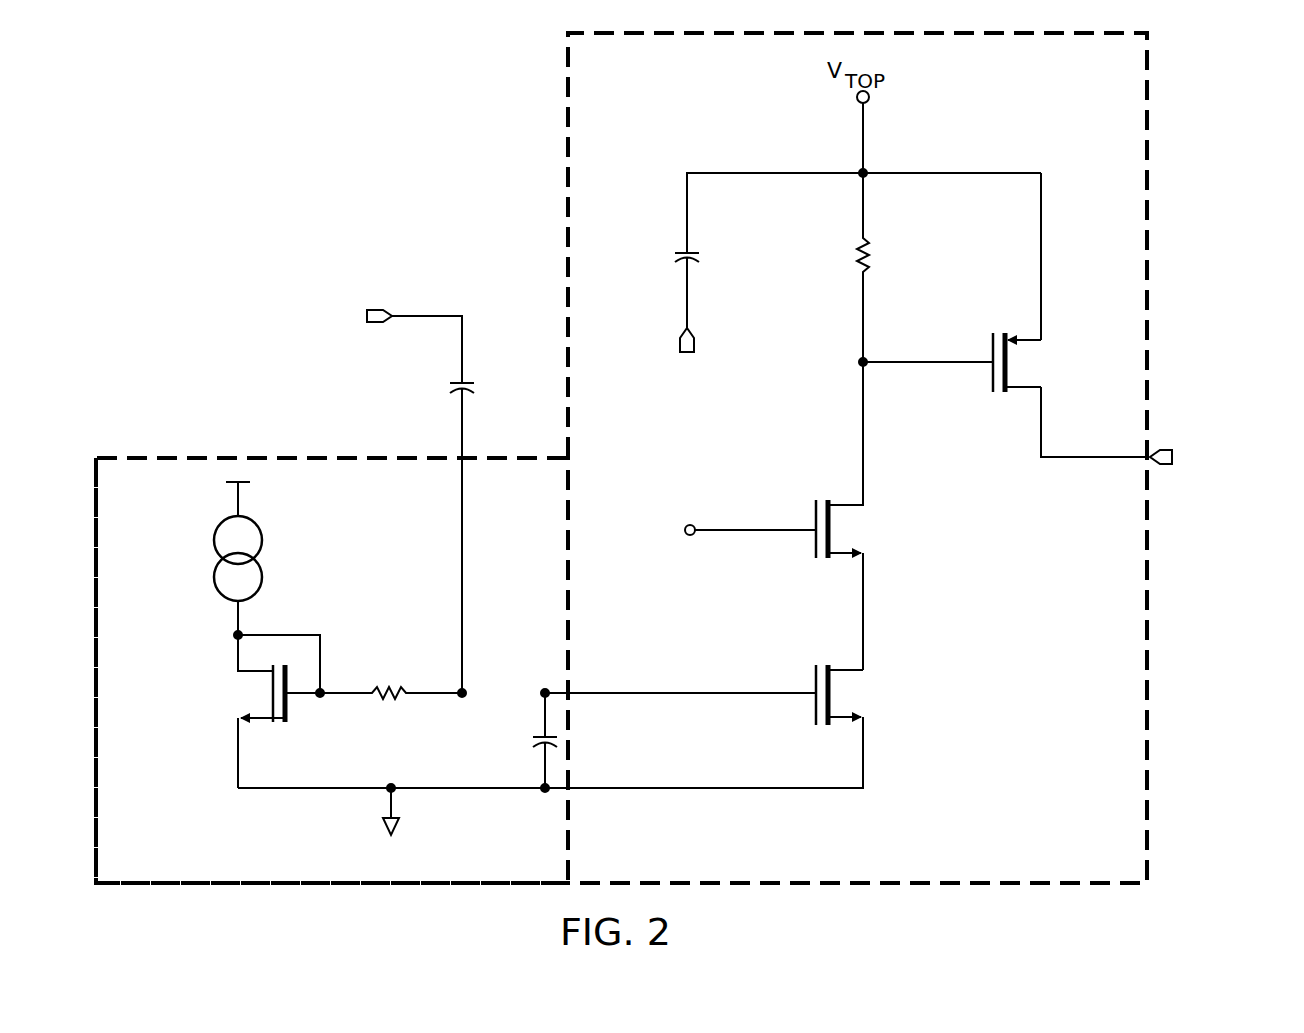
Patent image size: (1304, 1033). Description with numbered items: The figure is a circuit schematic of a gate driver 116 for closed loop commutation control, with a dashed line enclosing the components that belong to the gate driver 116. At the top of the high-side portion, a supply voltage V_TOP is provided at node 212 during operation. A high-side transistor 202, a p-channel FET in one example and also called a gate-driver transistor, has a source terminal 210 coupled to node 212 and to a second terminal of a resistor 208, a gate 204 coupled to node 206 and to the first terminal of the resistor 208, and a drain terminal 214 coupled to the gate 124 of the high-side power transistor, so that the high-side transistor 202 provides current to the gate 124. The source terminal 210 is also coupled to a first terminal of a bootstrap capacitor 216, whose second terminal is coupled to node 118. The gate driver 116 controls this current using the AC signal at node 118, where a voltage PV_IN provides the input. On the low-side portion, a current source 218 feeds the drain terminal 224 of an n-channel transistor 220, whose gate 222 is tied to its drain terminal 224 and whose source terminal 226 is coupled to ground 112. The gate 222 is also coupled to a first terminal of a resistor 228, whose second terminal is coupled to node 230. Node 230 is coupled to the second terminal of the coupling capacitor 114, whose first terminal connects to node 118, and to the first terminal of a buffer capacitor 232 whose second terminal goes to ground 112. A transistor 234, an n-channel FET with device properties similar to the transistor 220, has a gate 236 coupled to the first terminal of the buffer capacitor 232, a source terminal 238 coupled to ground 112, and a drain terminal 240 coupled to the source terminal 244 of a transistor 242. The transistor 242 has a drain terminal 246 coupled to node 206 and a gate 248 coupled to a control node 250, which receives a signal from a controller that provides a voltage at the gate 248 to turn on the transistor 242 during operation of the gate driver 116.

The ground 112 is at (384, 830).
The coupling capacitor 114 is at (452, 383).
The gate driver 116 is at (1152, 231).
The node 118 is at (372, 306).
The gate of high-side power transistor 124 is at (1163, 466).
The high-side transistor 202 is at (976, 350).
The gate 204 is at (990, 368).
The node 206 is at (868, 365).
The resistor 208 is at (870, 256).
The source terminal 210 is at (1043, 330).
The node 212 is at (867, 168).
The drain terminal 214 is at (1043, 398).
The bootstrap capacitor 216 is at (672, 254).
The current source 218 is at (213, 540).
The transistor 220 is at (200, 692).
The gate 222 is at (290, 700).
The drain terminal 224 is at (238, 660).
The source terminal 226 is at (238, 728).
The resistor 228 is at (388, 688).
The node 230 is at (466, 690).
The buffer capacitor 232 is at (531, 742).
The transistor 234 is at (800, 680).
The gate 236 is at (808, 700).
The source terminal 238 is at (866, 728).
The drain terminal 240 is at (866, 658).
The transistor 242 is at (800, 515).
The source terminal 244 is at (866, 565).
The drain terminal 246 is at (866, 493).
The gate 248 is at (808, 540).
The control node 250 is at (690, 538).